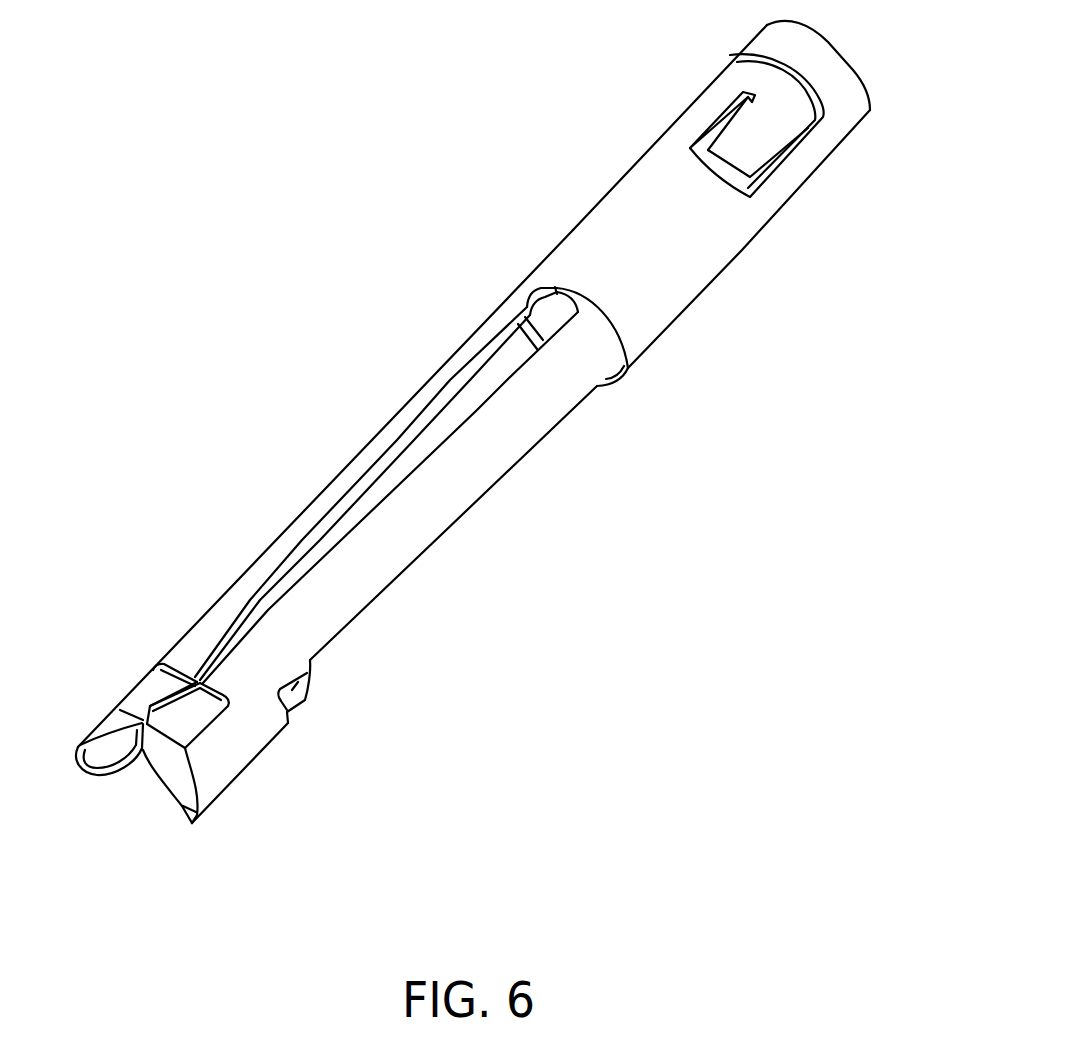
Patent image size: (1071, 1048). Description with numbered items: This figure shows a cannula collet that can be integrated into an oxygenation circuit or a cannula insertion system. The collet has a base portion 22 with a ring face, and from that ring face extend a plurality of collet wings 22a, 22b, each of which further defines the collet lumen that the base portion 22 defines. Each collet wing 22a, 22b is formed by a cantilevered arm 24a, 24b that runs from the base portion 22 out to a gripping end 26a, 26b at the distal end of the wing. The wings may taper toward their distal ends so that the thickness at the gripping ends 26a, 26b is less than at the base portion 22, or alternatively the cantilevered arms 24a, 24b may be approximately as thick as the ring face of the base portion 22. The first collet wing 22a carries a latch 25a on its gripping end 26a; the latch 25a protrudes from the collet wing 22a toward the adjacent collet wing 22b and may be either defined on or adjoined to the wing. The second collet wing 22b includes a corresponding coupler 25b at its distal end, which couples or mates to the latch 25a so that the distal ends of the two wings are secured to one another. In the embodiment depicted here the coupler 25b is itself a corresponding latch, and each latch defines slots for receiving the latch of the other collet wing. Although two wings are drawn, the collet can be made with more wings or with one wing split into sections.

The base portion 22 is at (555, 186).
The collet wing 22a is at (309, 404).
The collet wing 22b is at (493, 544).
The cantilevered arm 24a is at (422, 323).
The cantilevered arm 24b is at (627, 418).
The latch 25a is at (113, 659).
The coupler 25b is at (234, 754).
The gripping end 26a is at (63, 704).
The gripping end 26b is at (318, 722).